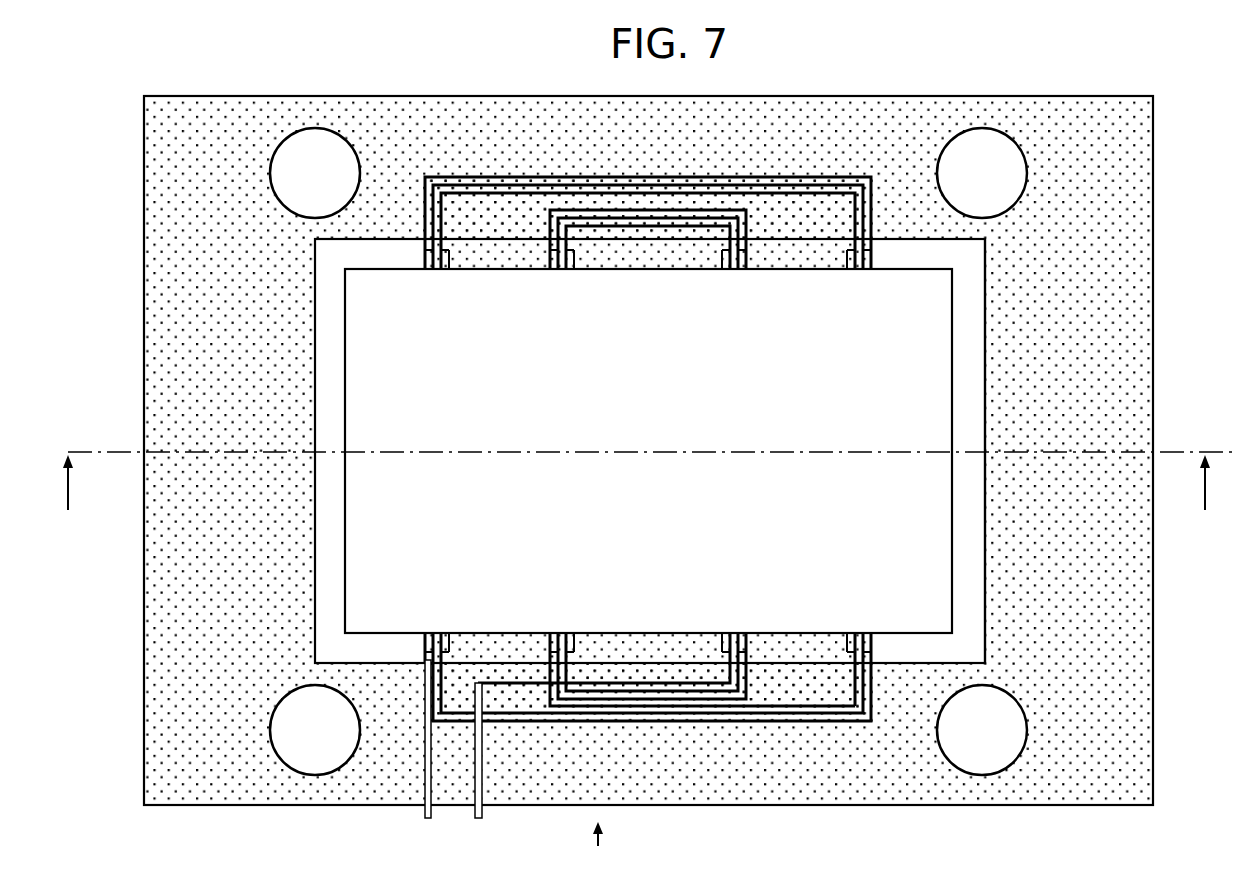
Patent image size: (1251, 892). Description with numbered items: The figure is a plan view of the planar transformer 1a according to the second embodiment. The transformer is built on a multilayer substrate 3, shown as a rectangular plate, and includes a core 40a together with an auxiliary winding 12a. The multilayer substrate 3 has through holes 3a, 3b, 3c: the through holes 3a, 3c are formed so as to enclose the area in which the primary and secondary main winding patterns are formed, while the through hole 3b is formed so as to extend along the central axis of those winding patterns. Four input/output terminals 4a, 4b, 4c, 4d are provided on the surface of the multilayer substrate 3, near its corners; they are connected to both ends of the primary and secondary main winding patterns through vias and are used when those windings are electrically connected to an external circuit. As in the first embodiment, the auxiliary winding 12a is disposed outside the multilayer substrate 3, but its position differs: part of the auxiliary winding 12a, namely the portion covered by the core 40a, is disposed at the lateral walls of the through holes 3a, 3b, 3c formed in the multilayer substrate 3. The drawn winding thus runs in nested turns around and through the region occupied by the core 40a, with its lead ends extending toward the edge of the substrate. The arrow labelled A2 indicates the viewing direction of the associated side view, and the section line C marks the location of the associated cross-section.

The planar transformer 1a is at (1231, 70).
The multilayer substrate 3 is at (1168, 294).
The through hole 3a is at (313, 303).
The through hole 3b is at (675, 240).
The through hole 3c is at (985, 293).
The input/output terminal 4a is at (1009, 134).
The input/output terminal 4b is at (348, 145).
The input/output terminal 4c is at (340, 768).
The input/output terminal 4d is at (1008, 768).
The auxiliary winding 12a is at (492, 177).
The core 40a is at (345, 415).